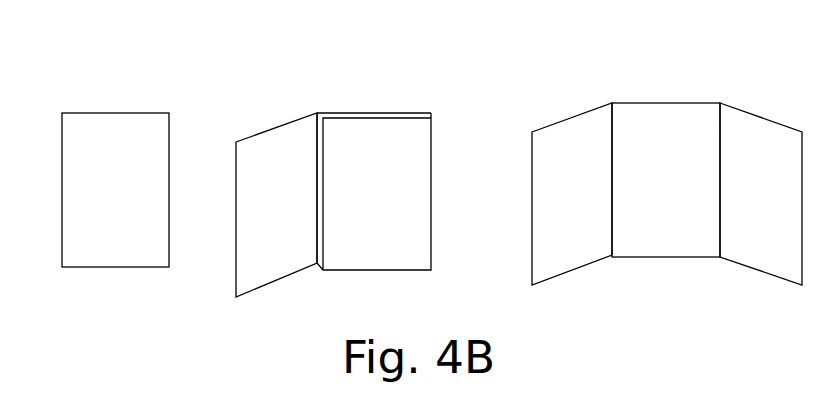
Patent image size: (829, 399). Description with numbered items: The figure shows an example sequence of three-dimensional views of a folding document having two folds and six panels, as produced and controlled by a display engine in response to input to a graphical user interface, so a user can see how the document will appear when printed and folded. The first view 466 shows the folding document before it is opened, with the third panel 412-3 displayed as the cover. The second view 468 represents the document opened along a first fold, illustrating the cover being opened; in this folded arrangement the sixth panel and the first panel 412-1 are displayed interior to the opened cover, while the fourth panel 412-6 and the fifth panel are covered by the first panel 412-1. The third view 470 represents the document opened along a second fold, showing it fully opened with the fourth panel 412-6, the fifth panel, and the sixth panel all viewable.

The first view 466 is at (66, 70).
The second view 468 is at (289, 70).
The third view 470 is at (583, 72).
The first panel 412-1 is at (426, 132).
The third panel 412-3 is at (135, 113).
The fourth panel 412-6 is at (753, 115).